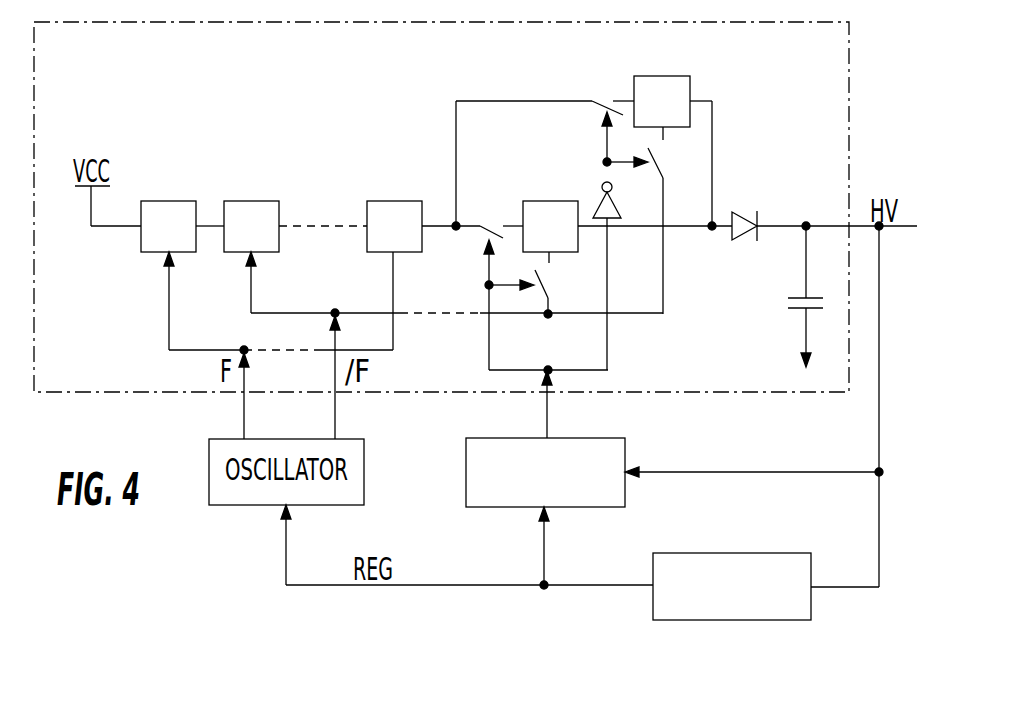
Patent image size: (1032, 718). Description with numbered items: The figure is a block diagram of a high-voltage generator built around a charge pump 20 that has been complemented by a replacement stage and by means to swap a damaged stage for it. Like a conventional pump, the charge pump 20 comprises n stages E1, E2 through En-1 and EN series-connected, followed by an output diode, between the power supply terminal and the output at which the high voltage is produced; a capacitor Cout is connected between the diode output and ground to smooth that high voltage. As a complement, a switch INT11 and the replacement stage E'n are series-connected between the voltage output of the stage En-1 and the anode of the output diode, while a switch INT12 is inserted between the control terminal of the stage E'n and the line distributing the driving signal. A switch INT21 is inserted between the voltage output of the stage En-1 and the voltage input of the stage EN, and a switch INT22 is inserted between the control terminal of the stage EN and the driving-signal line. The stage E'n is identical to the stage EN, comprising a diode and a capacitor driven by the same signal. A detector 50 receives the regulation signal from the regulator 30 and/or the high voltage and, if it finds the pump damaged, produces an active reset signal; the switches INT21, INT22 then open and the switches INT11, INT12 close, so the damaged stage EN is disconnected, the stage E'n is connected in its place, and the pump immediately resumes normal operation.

The charge pump 20 is at (849, 110).
The regulator 30 is at (722, 620).
The detector 50 is at (625, 448).
The first pump stage E1 is at (152, 201).
The second pump stage E2 is at (234, 201).
The stage En-1 is at (377, 201).
The stage En EN is at (536, 201).
The replacement stage En' E'n is at (693, 80).
The switch INT11 is at (612, 110).
The switch INT12 is at (655, 158).
The switch INT21 is at (482, 232).
The switch INT22 is at (549, 290).
The capacitor Cout is at (782, 296).